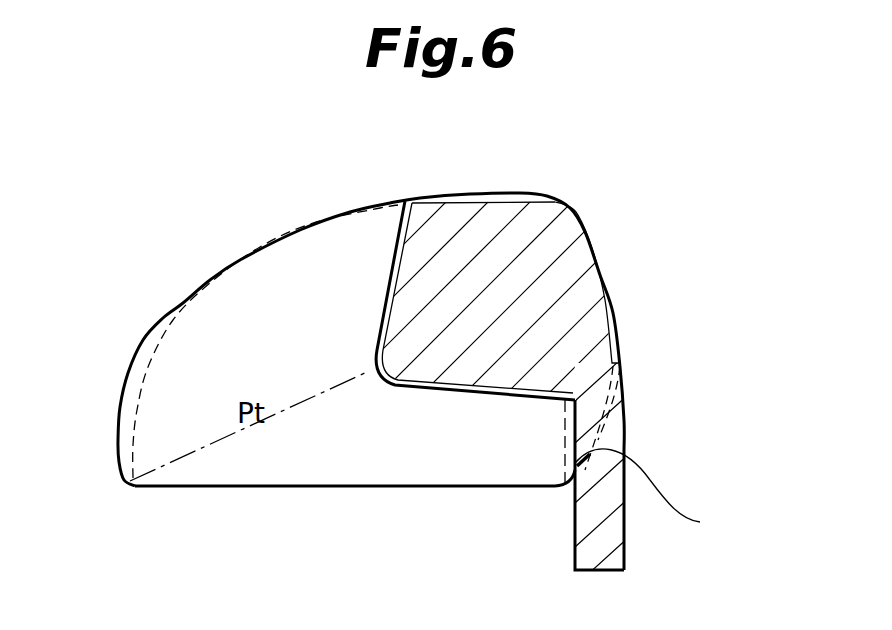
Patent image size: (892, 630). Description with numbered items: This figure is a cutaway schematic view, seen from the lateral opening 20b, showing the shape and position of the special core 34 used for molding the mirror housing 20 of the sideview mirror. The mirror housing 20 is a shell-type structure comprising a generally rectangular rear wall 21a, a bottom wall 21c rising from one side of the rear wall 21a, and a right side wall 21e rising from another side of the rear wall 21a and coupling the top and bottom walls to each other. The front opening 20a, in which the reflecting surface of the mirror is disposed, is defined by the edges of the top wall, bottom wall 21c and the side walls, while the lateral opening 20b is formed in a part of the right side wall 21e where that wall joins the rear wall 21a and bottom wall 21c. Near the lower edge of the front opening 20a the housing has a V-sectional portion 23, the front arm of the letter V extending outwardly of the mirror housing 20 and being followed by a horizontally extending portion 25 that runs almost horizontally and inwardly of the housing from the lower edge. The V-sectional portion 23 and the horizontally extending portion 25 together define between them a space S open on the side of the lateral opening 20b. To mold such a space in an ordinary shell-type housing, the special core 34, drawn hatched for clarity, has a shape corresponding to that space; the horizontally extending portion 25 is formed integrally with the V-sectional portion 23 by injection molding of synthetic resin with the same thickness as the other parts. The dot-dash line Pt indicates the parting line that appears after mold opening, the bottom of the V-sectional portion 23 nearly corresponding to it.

The mirror housing 20 is at (332, 193).
The front opening 20a is at (340, 484).
The lateral opening 20b is at (545, 293).
The rear wall 21a is at (205, 280).
The bottom wall 21c is at (612, 295).
The right side wall 21e is at (457, 443).
The V-sectional portion 23 is at (635, 342).
The horizontally extending portion 25 is at (657, 493).
The special core 34 is at (577, 521).